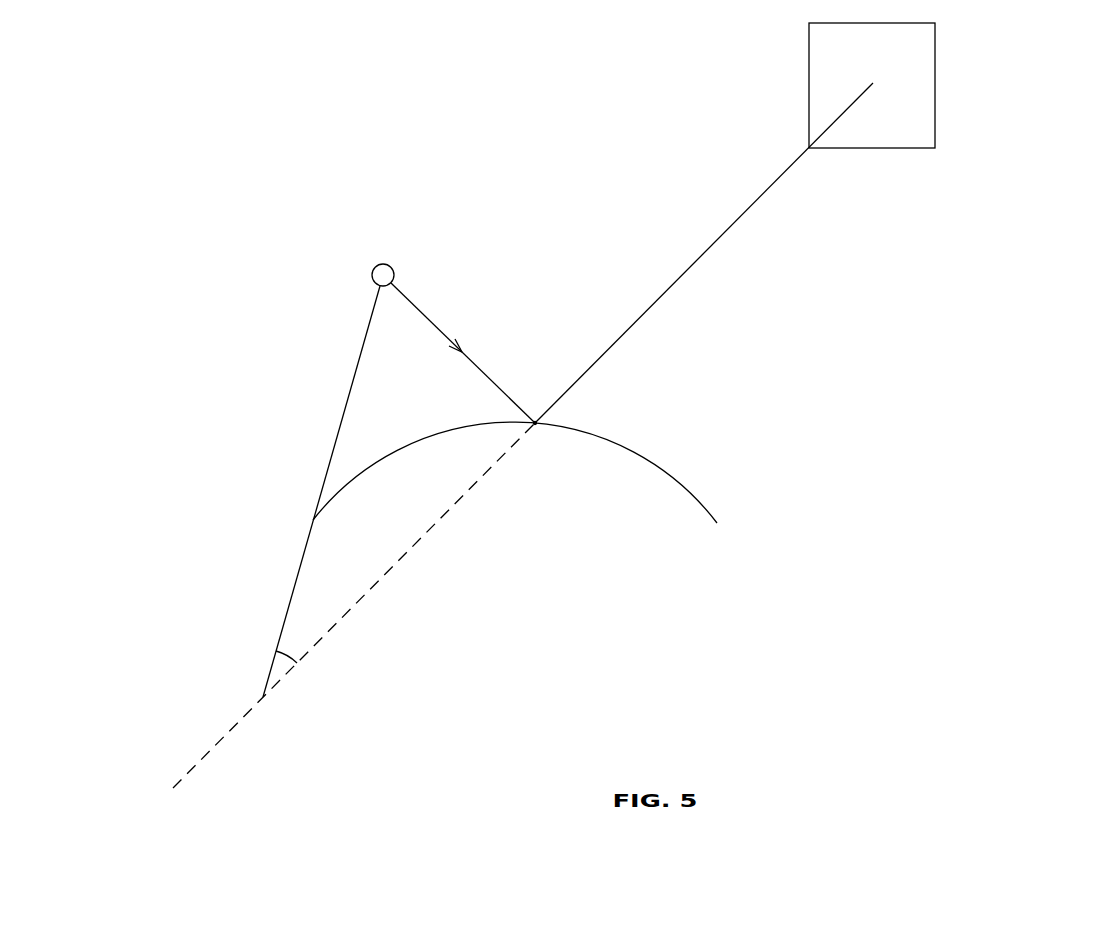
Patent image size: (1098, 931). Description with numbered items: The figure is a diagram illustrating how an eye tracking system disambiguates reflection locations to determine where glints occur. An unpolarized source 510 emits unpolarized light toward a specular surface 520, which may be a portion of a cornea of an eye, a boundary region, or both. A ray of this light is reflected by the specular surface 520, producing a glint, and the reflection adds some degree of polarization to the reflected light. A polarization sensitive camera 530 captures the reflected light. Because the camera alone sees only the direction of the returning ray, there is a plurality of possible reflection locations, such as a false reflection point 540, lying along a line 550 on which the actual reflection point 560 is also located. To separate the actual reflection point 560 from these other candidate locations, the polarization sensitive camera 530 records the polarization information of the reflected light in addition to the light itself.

The unpolarized source 510 is at (392, 267).
The specular surface 520 is at (695, 470).
The polarization sensitive camera 530 is at (935, 85).
The false reflection point 540 is at (262, 697).
The line 550 is at (425, 535).
The actual reflection point 560 is at (535, 422).